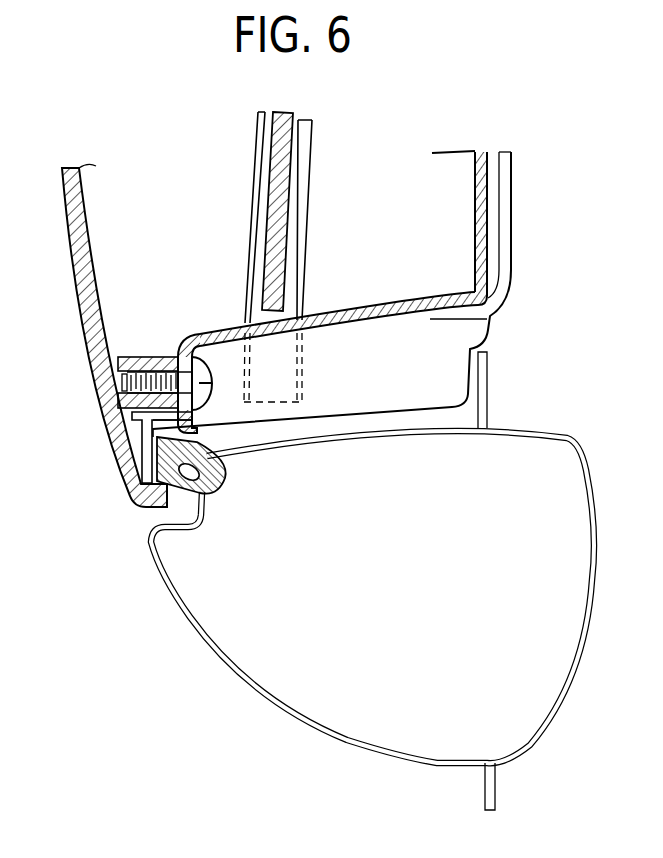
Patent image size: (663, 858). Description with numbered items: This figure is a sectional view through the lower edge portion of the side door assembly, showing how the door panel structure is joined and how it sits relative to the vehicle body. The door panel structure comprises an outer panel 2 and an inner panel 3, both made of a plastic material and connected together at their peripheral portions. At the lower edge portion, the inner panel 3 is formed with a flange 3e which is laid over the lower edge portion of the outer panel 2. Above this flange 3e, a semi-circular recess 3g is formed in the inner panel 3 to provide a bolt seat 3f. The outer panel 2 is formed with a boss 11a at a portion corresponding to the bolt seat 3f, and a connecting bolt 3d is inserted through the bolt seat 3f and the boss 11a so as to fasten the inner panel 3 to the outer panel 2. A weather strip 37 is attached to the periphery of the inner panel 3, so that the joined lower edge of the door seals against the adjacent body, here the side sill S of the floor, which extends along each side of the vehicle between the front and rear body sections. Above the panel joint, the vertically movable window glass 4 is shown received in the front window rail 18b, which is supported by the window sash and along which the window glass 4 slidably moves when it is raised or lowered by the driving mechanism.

The outer panel 2 is at (80, 279).
The inner panel 3 is at (488, 192).
The connecting bolt 3d is at (203, 353).
The flange 3e is at (150, 458).
The bolt seat 3f is at (201, 429).
The semi-circular recess 3g is at (388, 321).
The window glass 4 is at (283, 182).
The boss 11a is at (143, 357).
The front window rail 18b is at (293, 243).
The weather strip 37 is at (214, 491).
The side sill S is at (192, 620).